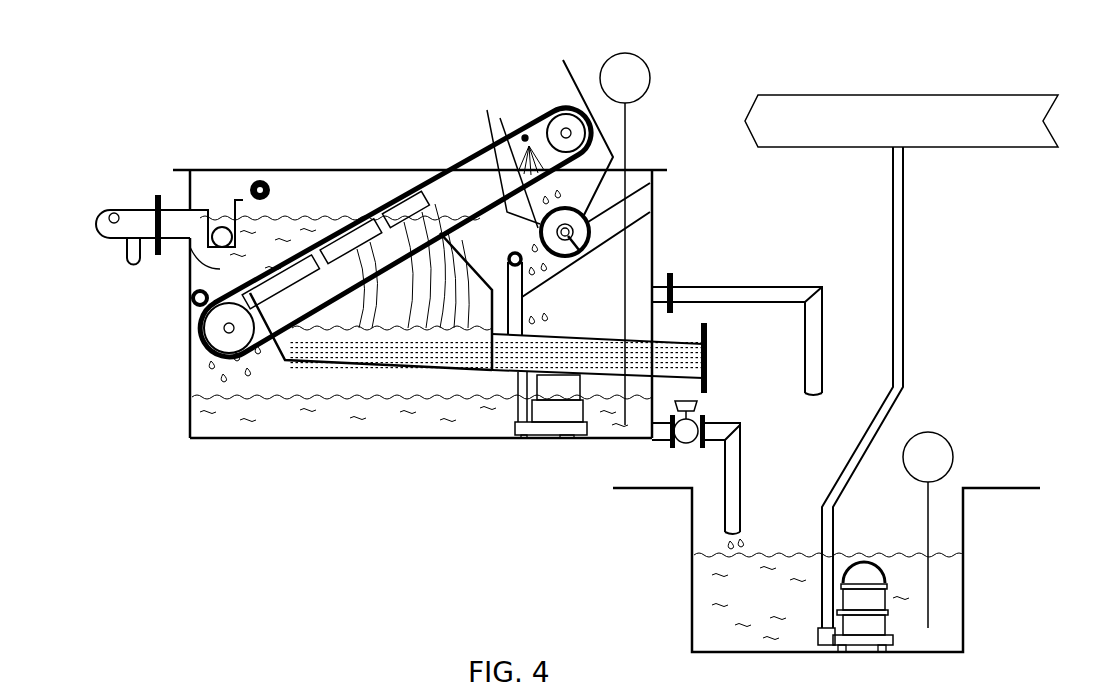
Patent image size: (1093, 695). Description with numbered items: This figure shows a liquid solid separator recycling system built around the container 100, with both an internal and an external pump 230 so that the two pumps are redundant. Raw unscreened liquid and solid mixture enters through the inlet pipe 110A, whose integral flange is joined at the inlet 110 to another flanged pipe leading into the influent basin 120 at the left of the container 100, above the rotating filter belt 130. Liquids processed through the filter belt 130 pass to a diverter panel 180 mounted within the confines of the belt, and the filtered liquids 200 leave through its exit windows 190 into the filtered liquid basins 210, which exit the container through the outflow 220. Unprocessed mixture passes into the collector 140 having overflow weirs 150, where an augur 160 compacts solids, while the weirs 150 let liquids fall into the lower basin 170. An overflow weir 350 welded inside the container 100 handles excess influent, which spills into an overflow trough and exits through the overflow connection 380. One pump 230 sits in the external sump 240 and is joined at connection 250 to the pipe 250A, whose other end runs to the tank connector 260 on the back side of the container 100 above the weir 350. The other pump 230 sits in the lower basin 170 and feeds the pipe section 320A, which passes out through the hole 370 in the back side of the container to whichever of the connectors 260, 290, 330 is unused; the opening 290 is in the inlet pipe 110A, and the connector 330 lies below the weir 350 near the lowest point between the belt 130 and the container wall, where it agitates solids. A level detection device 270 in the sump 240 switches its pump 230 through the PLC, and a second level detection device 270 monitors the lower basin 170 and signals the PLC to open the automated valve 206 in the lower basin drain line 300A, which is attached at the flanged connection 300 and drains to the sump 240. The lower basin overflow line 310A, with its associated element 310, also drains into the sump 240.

The container 100 is at (387, 168).
The inlet 110 is at (157, 194).
The inlet pipe 110A is at (120, 210).
The influent basin 120 is at (300, 216).
The rotating filter belt 130 is at (525, 134).
The collector 140 is at (652, 172).
The overflow weirs 150 is at (487, 110).
The augur 160 is at (564, 60).
The lower basin 170 is at (330, 436).
The diverter panel 180 is at (375, 210).
The exit windows 190 is at (412, 218).
The filtered liquids 200 is at (420, 345).
The automated valve 206 is at (684, 446).
The filtered liquid basin 210 is at (470, 374).
The outflow 220 is at (712, 336).
The pump 230 is at (550, 440).
The external sump 240 is at (965, 583).
The connection 250 is at (820, 638).
The pipe 250A is at (904, 345).
The tank connector 260 is at (258, 182).
The level detection device 270 is at (646, 62).
The opening 290 is at (125, 241).
The drain line connection 300 is at (668, 447).
The lower basin drain line 300A is at (742, 510).
The outlet valve 310 is at (672, 280).
The lower basin overflow line 310A is at (770, 292).
The pipe section 320A is at (646, 239).
The connector 330 is at (192, 302).
The overflow weir 350 is at (233, 200).
The hole 370 is at (510, 256).
The overflow connection 380 is at (218, 228).